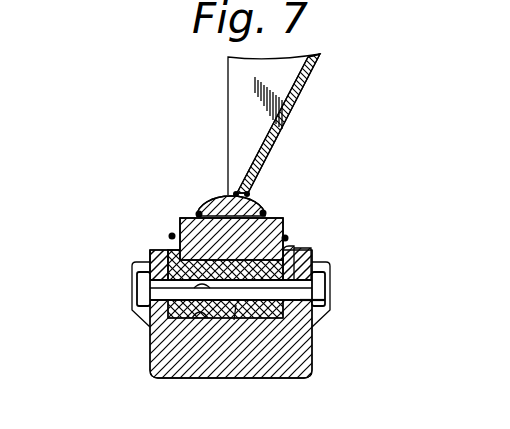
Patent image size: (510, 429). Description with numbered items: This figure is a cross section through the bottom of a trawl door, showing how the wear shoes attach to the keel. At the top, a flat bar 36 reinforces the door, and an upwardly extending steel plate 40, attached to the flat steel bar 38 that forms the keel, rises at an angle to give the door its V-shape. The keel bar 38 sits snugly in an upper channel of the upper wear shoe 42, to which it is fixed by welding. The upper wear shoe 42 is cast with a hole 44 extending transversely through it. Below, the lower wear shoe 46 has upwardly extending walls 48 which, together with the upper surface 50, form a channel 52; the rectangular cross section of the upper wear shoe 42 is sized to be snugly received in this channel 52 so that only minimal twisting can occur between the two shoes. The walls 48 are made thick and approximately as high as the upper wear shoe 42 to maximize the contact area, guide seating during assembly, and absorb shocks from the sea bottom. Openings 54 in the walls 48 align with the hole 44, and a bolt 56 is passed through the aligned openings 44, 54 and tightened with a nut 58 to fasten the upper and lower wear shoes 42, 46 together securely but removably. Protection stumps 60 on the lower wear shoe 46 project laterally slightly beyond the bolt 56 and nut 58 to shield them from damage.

The flat bar 36 is at (233, 113).
The upwardly extending steel plate 40 is at (292, 112).
The flat steel bar 38 is at (196, 212).
The upper wear shoe 42 is at (180, 238).
The upwardly extending walls 48 is at (157, 252).
The protection stumps 60 is at (133, 266).
The bolt 56 is at (148, 288).
The nut 58 is at (324, 285).
The openings 54 is at (318, 300).
The hole 44 is at (150, 322).
The channel 52 is at (172, 332).
The upper surface 50 is at (234, 320).
The lower wear shoe 46 is at (233, 291).